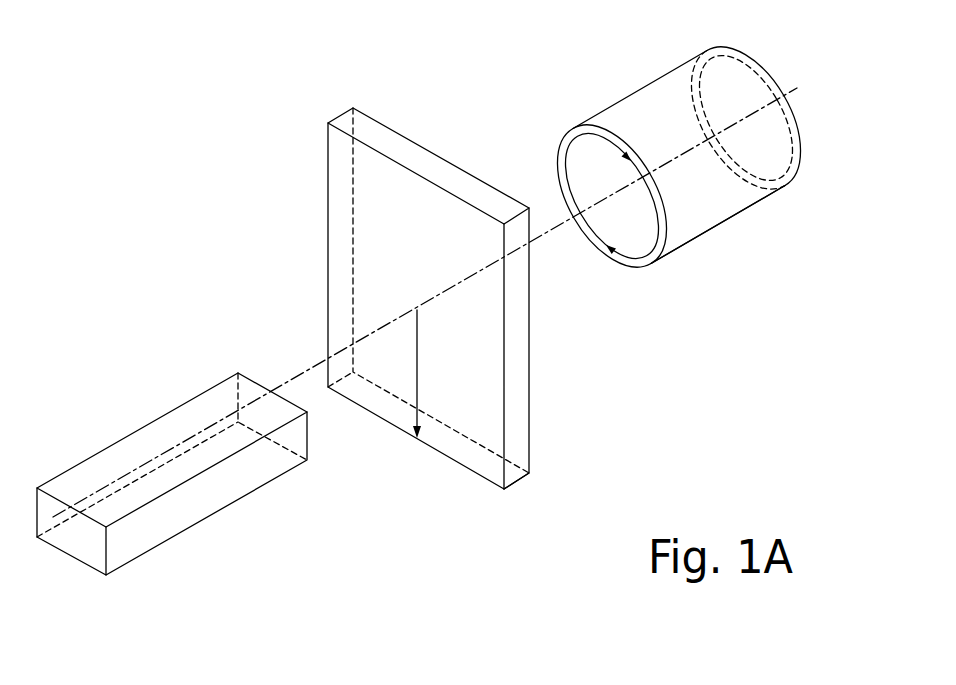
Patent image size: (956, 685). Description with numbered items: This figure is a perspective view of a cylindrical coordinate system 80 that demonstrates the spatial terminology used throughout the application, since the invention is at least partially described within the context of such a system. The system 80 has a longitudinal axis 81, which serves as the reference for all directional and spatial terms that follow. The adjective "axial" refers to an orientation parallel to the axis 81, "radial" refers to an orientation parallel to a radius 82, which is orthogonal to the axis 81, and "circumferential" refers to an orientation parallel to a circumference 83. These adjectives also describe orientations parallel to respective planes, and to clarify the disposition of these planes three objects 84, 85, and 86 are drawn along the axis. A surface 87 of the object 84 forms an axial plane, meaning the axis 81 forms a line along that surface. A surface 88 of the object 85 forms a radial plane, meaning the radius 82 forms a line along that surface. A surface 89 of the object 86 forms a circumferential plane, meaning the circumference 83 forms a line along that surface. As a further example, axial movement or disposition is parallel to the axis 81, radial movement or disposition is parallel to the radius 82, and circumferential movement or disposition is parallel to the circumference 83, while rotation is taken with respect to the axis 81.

The cylindrical coordinate system 80 is at (275, 164).
The longitudinal axis 81 is at (790, 92).
The radius 82 is at (417, 365).
The circumference 83 is at (558, 158).
The object 84 is at (133, 562).
The object 85 is at (549, 485).
The object 86 is at (717, 241).
The surface 87 is at (128, 453).
The surface 88 is at (343, 252).
The surface 89 is at (643, 90).